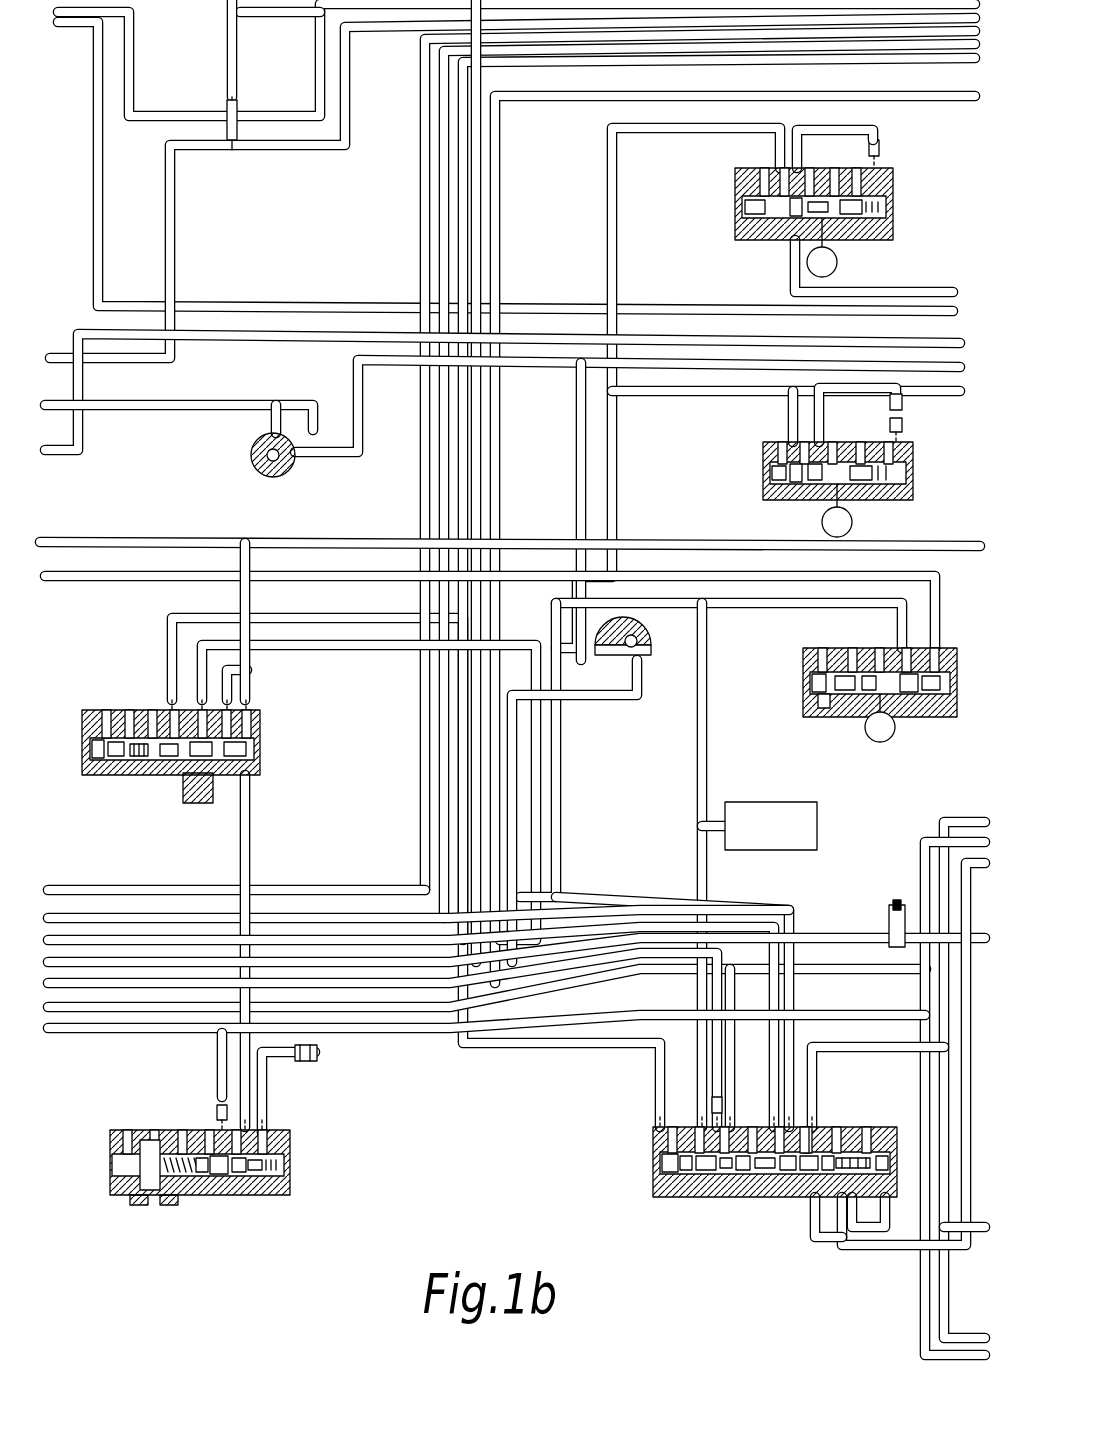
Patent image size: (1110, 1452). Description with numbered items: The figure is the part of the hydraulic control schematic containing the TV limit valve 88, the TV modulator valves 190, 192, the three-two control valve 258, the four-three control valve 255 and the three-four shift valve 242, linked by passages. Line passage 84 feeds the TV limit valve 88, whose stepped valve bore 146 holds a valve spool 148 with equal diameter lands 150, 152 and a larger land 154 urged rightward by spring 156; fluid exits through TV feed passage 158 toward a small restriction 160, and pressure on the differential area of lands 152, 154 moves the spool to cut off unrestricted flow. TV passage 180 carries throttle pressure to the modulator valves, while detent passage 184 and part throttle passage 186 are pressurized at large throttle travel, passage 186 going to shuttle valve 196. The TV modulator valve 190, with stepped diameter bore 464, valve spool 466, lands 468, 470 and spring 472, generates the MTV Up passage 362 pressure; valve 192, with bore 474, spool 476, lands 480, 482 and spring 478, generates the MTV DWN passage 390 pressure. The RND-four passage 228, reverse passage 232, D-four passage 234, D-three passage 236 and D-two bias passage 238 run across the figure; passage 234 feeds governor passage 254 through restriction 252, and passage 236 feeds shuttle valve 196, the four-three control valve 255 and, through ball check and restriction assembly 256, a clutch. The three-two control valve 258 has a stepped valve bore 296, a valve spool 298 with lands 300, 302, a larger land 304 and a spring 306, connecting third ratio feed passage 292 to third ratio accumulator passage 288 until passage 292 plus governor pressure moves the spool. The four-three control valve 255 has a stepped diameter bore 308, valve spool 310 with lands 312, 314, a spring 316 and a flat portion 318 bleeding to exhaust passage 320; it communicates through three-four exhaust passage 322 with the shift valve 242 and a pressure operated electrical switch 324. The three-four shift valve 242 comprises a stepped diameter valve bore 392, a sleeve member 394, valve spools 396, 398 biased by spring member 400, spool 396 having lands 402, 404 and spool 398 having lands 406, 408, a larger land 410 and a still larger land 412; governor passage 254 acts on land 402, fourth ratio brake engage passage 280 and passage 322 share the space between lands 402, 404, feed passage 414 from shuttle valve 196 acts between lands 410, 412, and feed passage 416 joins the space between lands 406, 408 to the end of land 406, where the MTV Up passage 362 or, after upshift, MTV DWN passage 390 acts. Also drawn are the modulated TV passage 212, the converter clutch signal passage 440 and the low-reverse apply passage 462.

The line passage 84 is at (97, 888).
The TV limit valve 88 is at (225, 1152).
The stepped valve bore 146 is at (180, 1150).
The valve spool 148 is at (248, 1176).
The land 150 is at (280, 1165).
The land 152 is at (220, 1156).
The larger land 154 is at (205, 1178).
The spring 156 is at (158, 1132).
The TV feed passage 158 is at (62, 1035).
The small restriction 160 is at (322, 1052).
The TV passage 180 is at (68, 585).
The detent passage 184 is at (920, 872).
The part throttle passage 186 is at (585, 697).
The TV modulator valve 190 is at (793, 214).
The TV modulator valve 192 is at (801, 470).
The shuttle valve 196 is at (660, 628).
The modulated TV passage 212 is at (176, 930).
The RND4 passage 228 is at (790, 52).
The reverse passage 232 is at (62, 448).
The D4 passage 234 is at (132, 50).
The D3 passage 236 is at (145, 404).
The D2 bias passage 238 is at (138, 6).
The 3-4 shift valve 242 is at (739, 1148).
The restriction 252 is at (226, 100).
The governor passage 254 is at (212, 150).
The 4-3 control valve 255 is at (856, 693).
The ball check and restriction assembly 256 is at (250, 465).
The 3-2 control valve 258 is at (204, 753).
The fourth ratio brake engage passage 280 is at (772, 990).
The third ratio accumulator passage 288 is at (292, 650).
The third ratio feed passage 292 is at (65, 542).
The stepped valve bore 296 is at (95, 738).
The valve spool 298 is at (212, 745).
The land 300 is at (248, 762).
The land 302 is at (172, 762).
The larger diameter land 304 is at (140, 762).
The spring 306 is at (132, 740).
The stepped diameter bore 308 is at (855, 672).
The valve spool 310 is at (915, 612).
The land 312 is at (935, 660).
The land 314 is at (932, 696).
The spring 316 is at (838, 660).
The flat portion 318 is at (880, 700).
The exhaust passage 320 is at (868, 735).
The 3-4 exhaust passage 322 is at (698, 775).
The pressure operated electrical switch 324 is at (755, 848).
The MTV Up passage 362 is at (878, 128).
The MTV DWN passage 390 is at (820, 420).
The stepped diameter valve bore 392 is at (660, 1160).
The sleeve member 394 is at (812, 1154).
The valve spool 396 is at (704, 1174).
The valve spool 398 is at (805, 1230).
The spring member 400 is at (870, 1156).
The land 402 is at (665, 1168).
The land 404 is at (744, 1174).
The land 406 is at (820, 1197).
The land 408 is at (808, 1120).
The larger diameter land 410 is at (766, 1174).
The still larger diameter land 412 is at (728, 1172).
The feed passage 414 is at (562, 790).
The feed passage 416 is at (868, 1228).
The converter clutch signal passage 440 is at (963, 100).
The low-reverse apply passage 462 is at (80, 26).
The stepped diameter bore 464 is at (818, 200).
The valve spool 466 is at (745, 208).
The land 468 is at (795, 198).
The land 470 is at (828, 248).
The spring 472 is at (888, 202).
The stepped valve bore 474 is at (780, 462).
The valve spool 476 is at (790, 470).
The spring 478 is at (905, 472).
The land 480 is at (818, 484).
The land 482 is at (858, 490).